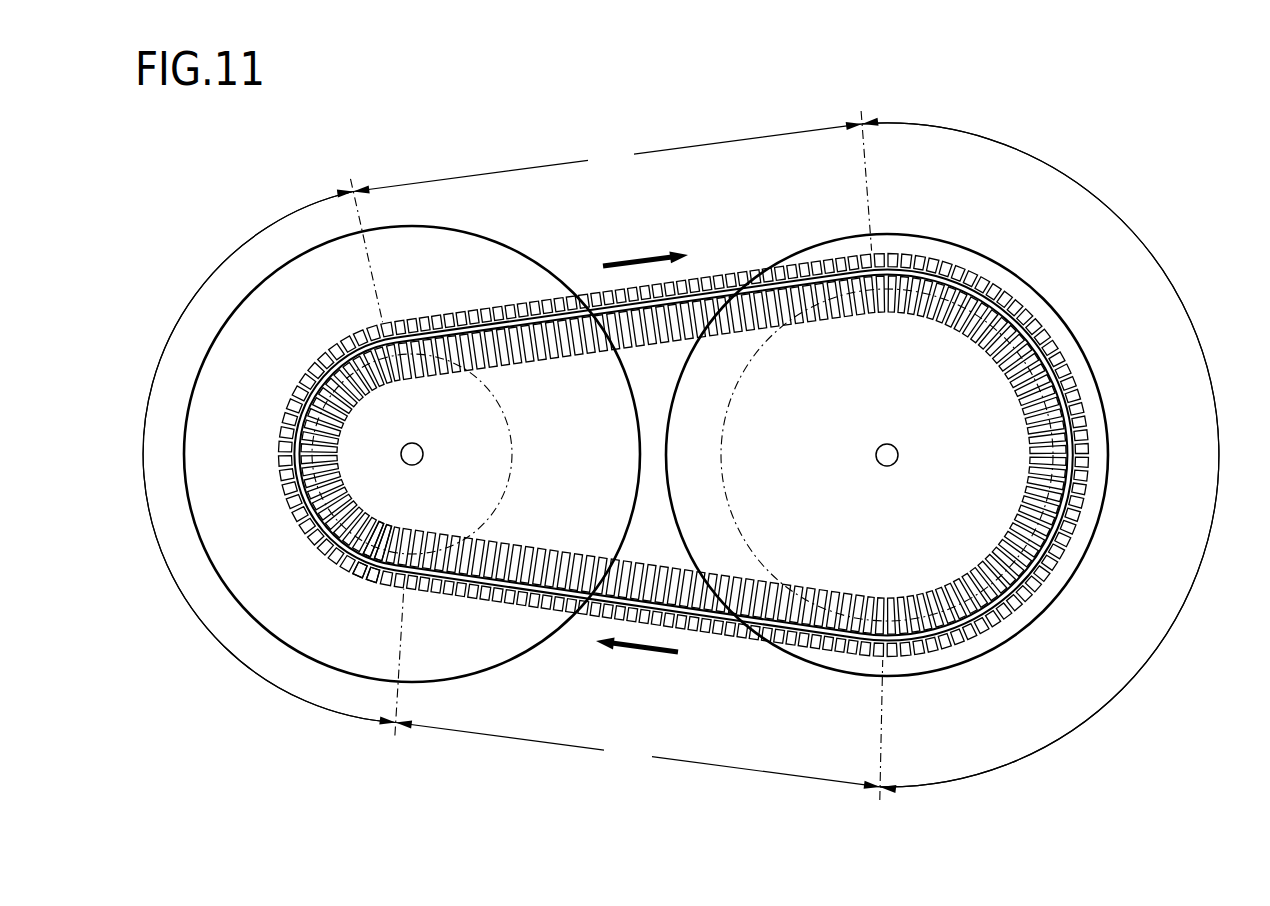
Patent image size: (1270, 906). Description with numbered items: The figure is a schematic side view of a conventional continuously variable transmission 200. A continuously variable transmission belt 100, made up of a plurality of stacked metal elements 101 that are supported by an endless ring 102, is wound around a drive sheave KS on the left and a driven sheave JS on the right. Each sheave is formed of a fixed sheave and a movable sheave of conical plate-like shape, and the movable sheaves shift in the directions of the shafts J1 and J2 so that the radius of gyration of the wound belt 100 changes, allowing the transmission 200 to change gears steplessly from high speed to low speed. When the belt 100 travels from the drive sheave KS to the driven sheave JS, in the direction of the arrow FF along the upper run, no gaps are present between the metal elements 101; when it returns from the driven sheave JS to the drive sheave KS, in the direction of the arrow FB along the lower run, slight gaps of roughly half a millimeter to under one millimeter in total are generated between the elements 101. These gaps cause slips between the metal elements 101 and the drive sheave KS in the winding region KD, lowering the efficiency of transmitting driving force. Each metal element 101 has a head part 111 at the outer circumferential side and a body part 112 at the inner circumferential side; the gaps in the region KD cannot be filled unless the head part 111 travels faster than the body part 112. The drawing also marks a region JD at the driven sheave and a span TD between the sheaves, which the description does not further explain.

The continuously variable transmission 200 is at (248, 195).
The continuously variable transmission belt 100 is at (682, 411).
The metal element 101 is at (778, 322).
The endless ring 102 is at (805, 282).
The head part 111 is at (365, 577).
The body part 112 is at (388, 523).
The shaft J1 is at (421, 457).
The shaft J2 is at (896, 458).
The drive sheave KS is at (274, 565).
The driven sheave JS is at (972, 417).
The region where the belt is wound around the drive sheave KD is at (262, 457).
The driven pulley diameter JD is at (1046, 455).
The chord length between pulleys TD is at (617, 455).
The arrow indicating traveling direction from drive sheave to driven sheave FF is at (645, 248).
The arrow indicating traveling direction from driven sheave to drive sheave FB is at (637, 660).